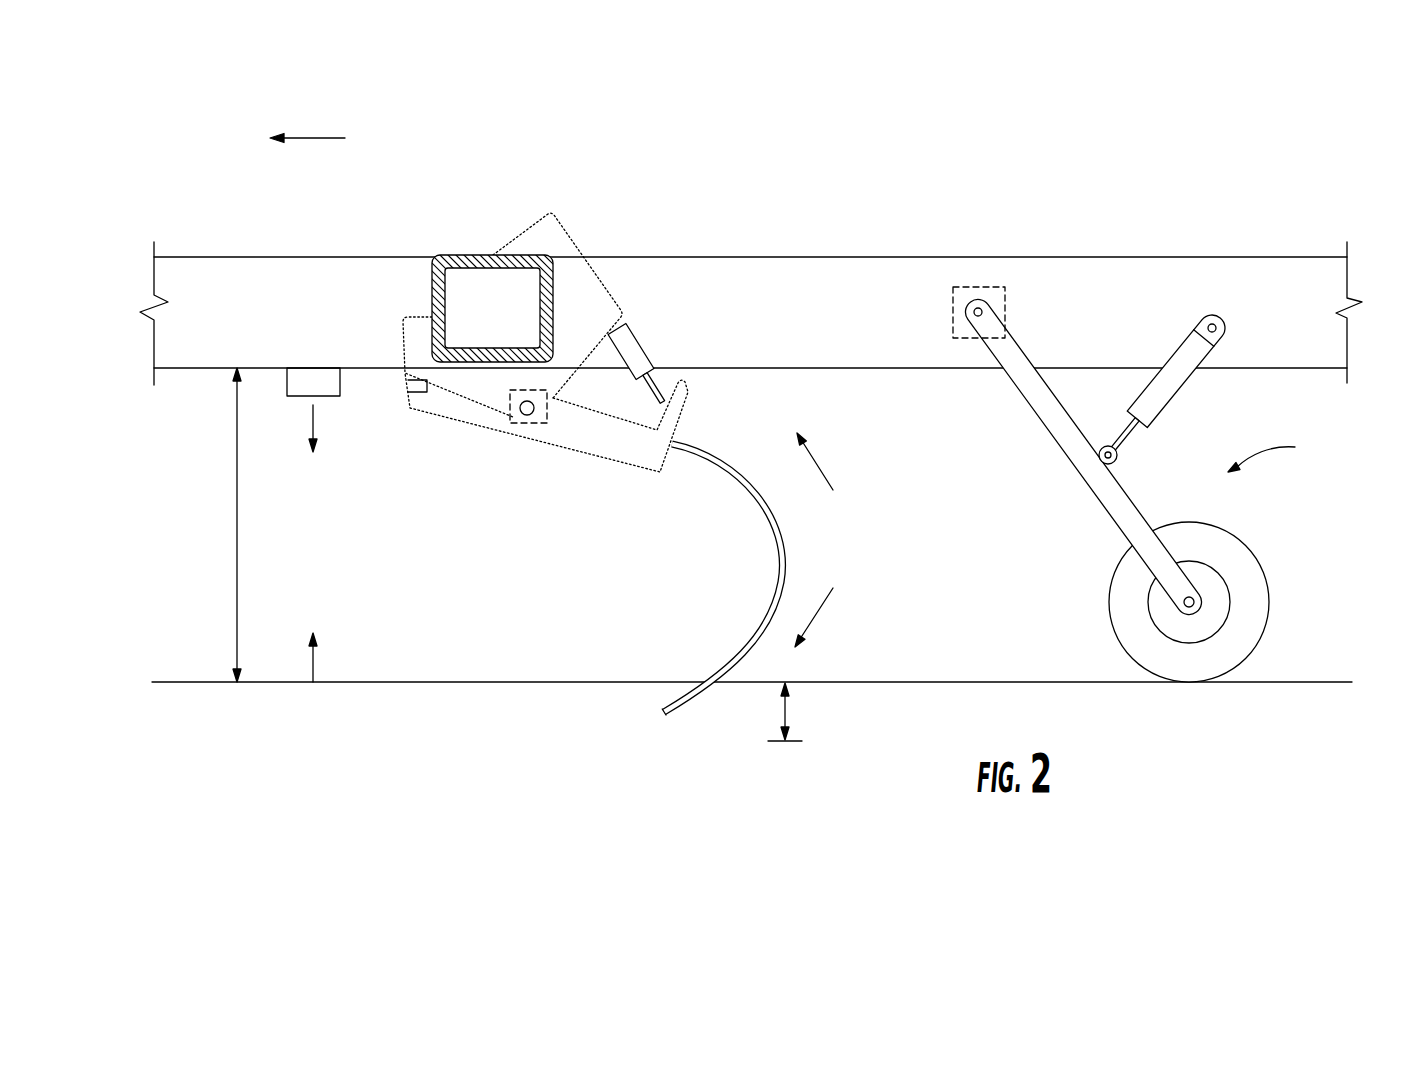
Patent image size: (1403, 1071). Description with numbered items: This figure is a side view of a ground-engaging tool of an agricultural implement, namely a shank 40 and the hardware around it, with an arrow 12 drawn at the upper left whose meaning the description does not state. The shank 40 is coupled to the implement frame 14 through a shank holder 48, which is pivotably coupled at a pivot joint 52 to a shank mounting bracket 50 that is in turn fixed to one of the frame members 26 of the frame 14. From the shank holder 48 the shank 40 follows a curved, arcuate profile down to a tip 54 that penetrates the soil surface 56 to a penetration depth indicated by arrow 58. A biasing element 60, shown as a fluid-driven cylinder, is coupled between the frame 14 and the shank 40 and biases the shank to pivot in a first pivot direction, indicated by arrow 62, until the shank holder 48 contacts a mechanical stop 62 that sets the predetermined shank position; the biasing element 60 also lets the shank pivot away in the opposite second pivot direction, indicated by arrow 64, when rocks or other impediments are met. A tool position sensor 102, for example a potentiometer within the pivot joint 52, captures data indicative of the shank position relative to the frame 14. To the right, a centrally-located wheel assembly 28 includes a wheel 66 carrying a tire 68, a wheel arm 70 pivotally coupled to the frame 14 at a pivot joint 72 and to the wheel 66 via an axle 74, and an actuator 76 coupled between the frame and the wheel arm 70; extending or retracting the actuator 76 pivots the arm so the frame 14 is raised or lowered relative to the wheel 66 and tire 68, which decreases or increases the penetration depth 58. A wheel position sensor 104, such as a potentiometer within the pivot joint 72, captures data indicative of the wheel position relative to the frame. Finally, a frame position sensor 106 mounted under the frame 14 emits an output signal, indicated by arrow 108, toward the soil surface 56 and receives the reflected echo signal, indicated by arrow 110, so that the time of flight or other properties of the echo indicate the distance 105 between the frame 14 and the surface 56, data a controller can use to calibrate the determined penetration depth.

The direction of travel 12 is at (313, 138).
The implement frame 14 is at (777, 250).
The frame member 26 is at (455, 255).
The wheel assembly 28 is at (1276, 450).
The shank 40 is at (765, 537).
The shank holder 48 is at (610, 460).
The shank mounting bracket 50 is at (577, 240).
The pivot joint 52 is at (533, 413).
The tip 54 is at (660, 715).
The soil surface 56 is at (487, 682).
The penetration depth 58 is at (787, 710).
The biasing element 60 is at (647, 347).
The mechanical stop 62 is at (407, 382).
The second pivot direction 64 is at (820, 473).
The wheel 66 is at (1158, 615).
The tire 68 is at (1270, 625).
The wheel arm 70 is at (1105, 510).
The pivot joint 72 is at (990, 310).
The axle 74 is at (1190, 597).
The actuator 76 is at (1185, 385).
The tool position sensor 102 is at (510, 422).
The wheel position sensor 104 is at (978, 288).
The distance 105 is at (237, 558).
The frame position sensor 106 is at (340, 385).
The output signal 108 is at (313, 418).
The echo signal 110 is at (315, 667).